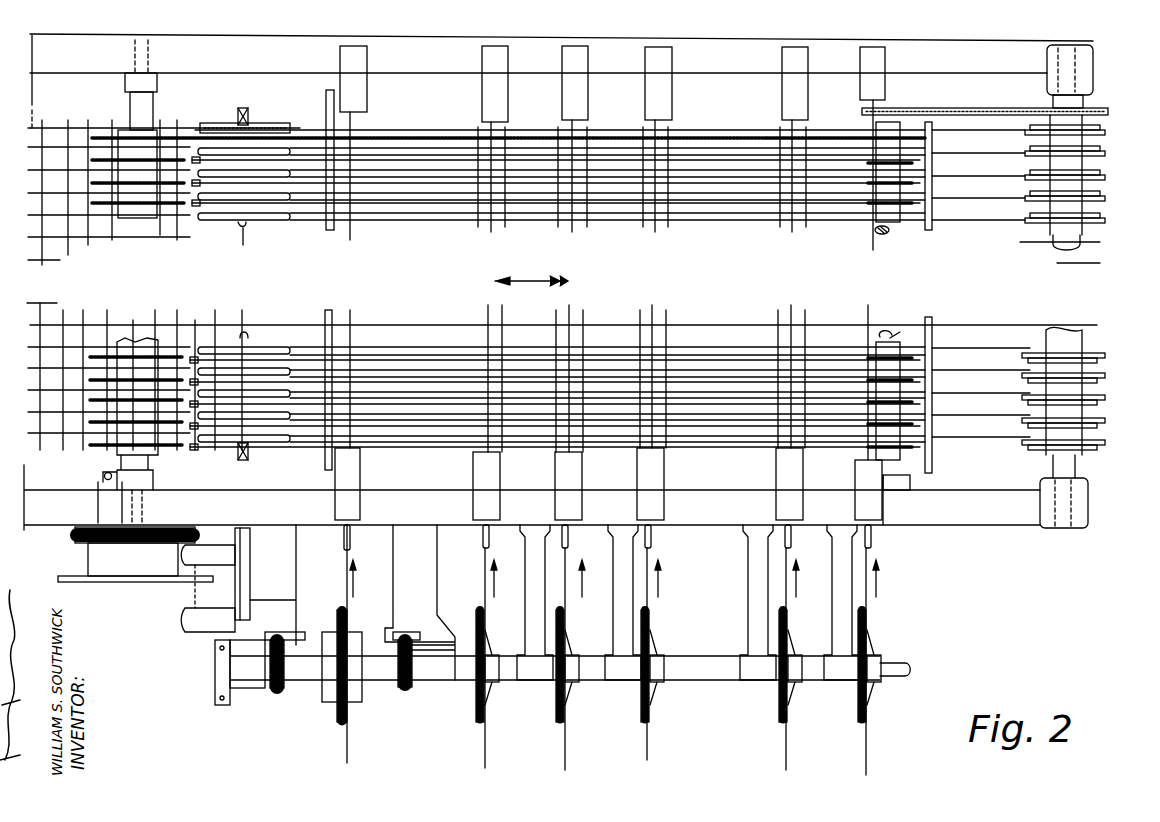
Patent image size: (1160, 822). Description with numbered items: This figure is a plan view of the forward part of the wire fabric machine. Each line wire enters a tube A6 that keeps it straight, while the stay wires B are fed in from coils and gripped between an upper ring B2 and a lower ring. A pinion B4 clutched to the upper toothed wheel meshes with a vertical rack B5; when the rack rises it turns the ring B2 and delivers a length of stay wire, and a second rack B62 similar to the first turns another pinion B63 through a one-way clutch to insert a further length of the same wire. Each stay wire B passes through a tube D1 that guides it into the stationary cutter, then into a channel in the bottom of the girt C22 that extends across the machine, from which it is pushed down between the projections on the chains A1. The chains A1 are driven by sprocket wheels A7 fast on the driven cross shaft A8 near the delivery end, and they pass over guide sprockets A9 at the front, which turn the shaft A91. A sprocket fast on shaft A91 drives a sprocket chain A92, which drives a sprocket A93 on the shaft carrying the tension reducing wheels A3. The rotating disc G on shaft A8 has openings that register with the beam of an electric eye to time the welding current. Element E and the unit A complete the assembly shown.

The tube A is at (968, 198).
The chain A1 is at (542, 162).
The tension reducing wheels A3 is at (1105, 182).
The tube A6 is at (882, 335).
The sprocket wheel A7 is at (151, 222).
The driven cross shaft A8 is at (157, 100).
The guide sprocket A9 is at (915, 425).
The shaft A91 is at (878, 232).
The sprocket chain A92 is at (1003, 112).
The sprocket A93 is at (1108, 114).
The stay wire B is at (482, 582).
The upper ring B2 is at (650, 722).
The pinion B4 is at (278, 688).
The vertical rack B5 is at (292, 637).
The rack B62 is at (400, 681).
The pinion B63 is at (410, 690).
The girt C22 is at (482, 95).
The tube D1 is at (873, 540).
The rollers E is at (273, 218).
The rotating disc G is at (128, 582).